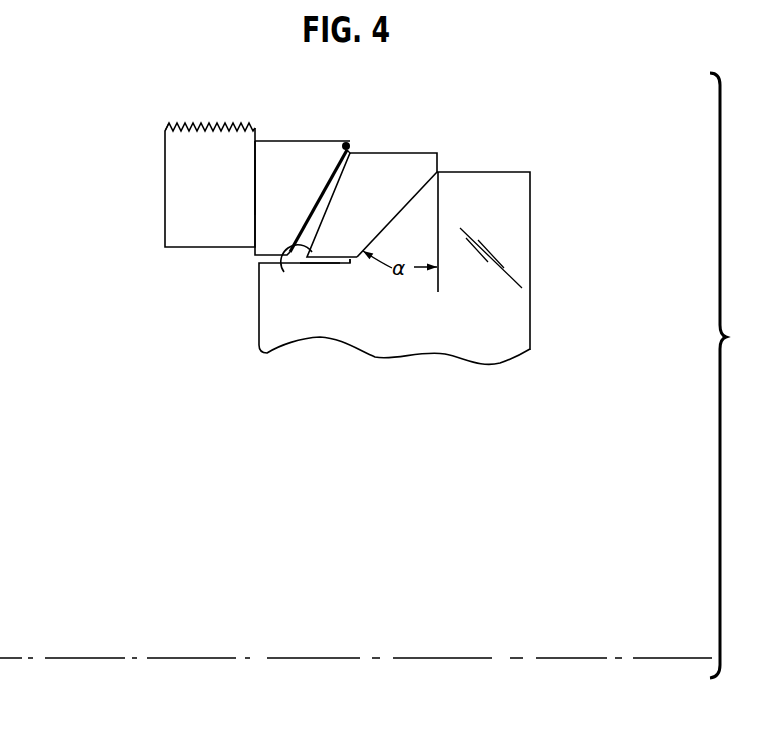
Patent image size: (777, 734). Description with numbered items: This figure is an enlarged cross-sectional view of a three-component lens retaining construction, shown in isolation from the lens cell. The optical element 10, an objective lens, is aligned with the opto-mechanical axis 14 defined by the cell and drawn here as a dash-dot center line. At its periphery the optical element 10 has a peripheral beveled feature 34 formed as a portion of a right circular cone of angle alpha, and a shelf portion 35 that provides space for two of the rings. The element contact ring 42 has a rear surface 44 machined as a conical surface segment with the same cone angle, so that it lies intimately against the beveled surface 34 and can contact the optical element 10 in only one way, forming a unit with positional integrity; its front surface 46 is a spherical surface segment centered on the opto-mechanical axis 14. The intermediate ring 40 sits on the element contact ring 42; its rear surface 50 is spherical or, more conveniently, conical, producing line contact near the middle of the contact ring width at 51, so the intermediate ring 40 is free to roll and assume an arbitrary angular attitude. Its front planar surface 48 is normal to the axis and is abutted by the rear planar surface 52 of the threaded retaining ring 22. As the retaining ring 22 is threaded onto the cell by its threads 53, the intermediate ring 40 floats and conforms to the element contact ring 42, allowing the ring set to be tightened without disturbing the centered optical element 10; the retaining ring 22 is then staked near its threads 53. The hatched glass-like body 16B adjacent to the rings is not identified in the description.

The optical element 10 is at (293, 313).
The opto-mechanical axis 14 is at (322, 650).
The transparent element 16B is at (527, 218).
The threaded retaining ring 22 is at (207, 130).
The peripheral beveled feature 34 is at (358, 256).
The shelf portion 35 is at (318, 265).
The intermediate ring 40 is at (270, 150).
The element contact ring 42 is at (400, 172).
The rear surface 44 is at (407, 198).
The front surface 46 is at (307, 253).
The front planar surface 48 is at (255, 203).
The rear surface 50 is at (342, 140).
The line contact 51 is at (330, 197).
The rear planar surface 52 is at (255, 177).
The threads 53 is at (168, 124).